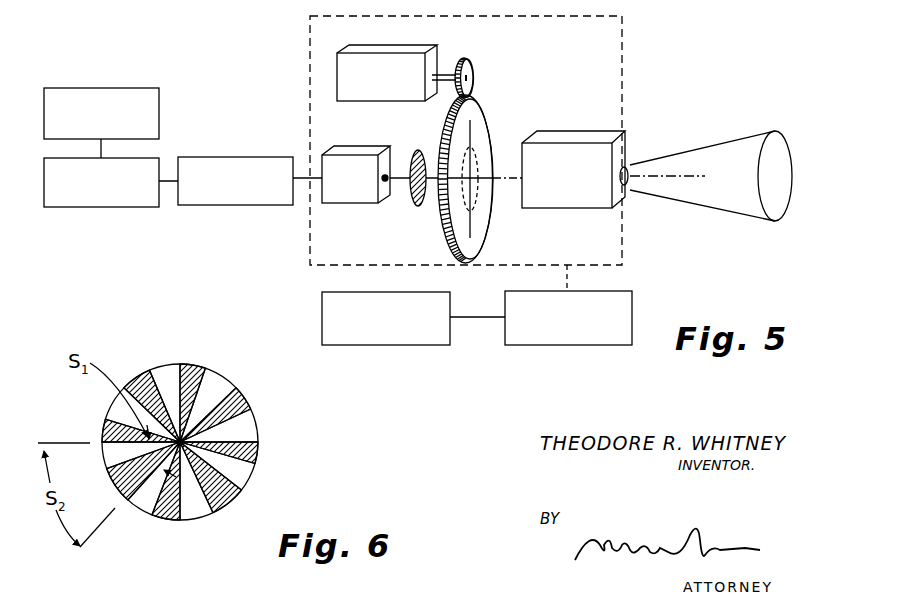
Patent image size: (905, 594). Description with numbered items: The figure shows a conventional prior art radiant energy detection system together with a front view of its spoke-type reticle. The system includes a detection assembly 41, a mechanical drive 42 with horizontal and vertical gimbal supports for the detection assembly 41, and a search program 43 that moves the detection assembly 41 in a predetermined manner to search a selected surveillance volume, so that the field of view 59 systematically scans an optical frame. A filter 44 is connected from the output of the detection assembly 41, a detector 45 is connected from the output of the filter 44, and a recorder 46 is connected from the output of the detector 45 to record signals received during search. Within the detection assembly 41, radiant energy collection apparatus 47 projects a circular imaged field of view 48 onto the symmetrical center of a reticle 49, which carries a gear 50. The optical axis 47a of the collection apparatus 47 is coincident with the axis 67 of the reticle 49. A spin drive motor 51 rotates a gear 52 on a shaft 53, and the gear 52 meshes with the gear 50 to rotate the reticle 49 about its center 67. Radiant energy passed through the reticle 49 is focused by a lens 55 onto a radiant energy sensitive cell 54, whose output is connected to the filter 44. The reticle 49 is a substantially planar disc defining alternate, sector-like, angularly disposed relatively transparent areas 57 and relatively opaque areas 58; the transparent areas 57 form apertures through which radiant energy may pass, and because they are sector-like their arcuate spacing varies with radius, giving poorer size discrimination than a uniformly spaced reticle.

In FIG. 5, the detection assembly 41 is at (630, 39).
In FIG. 5, the mechanical drive 42 is at (600, 293).
In FIG. 5, the search program 43 is at (432, 293).
In FIG. 5, the filter 44 is at (244, 158).
In FIG. 5, the detector 45 is at (122, 207).
In FIG. 5, the recorder 46 is at (120, 89).
In FIG. 5, the radiant energy collection apparatus 47 is at (577, 134).
In FIG. 5, the optical axis 47a is at (510, 183).
In FIG. 5, the circular imaged field of view 48 is at (467, 179).
In FIG. 5, the reticle 49 is at (485, 240).
In FIG. 6, the reticle 49 is at (199, 439).
In FIG. 5, the gear 50 is at (448, 256).
In FIG. 5, the spin drive motor 51 is at (383, 49).
In FIG. 5, the gear 52 is at (474, 70).
In FIG. 5, the shaft 53 is at (447, 72).
In FIG. 5, the radiant energy sensitive cell 54 is at (350, 147).
In FIG. 5, the lens 55 is at (418, 152).
In FIG. 6, the transparent areas 57 is at (168, 366).
In FIG. 6, the opaque areas 58 is at (141, 374).
In FIG. 5, the field of view 59 is at (792, 131).
In FIG. 5, the symmetrical axis or center 67 is at (477, 163).
In FIG. 6, the symmetrical axis or center 67 is at (180, 442).